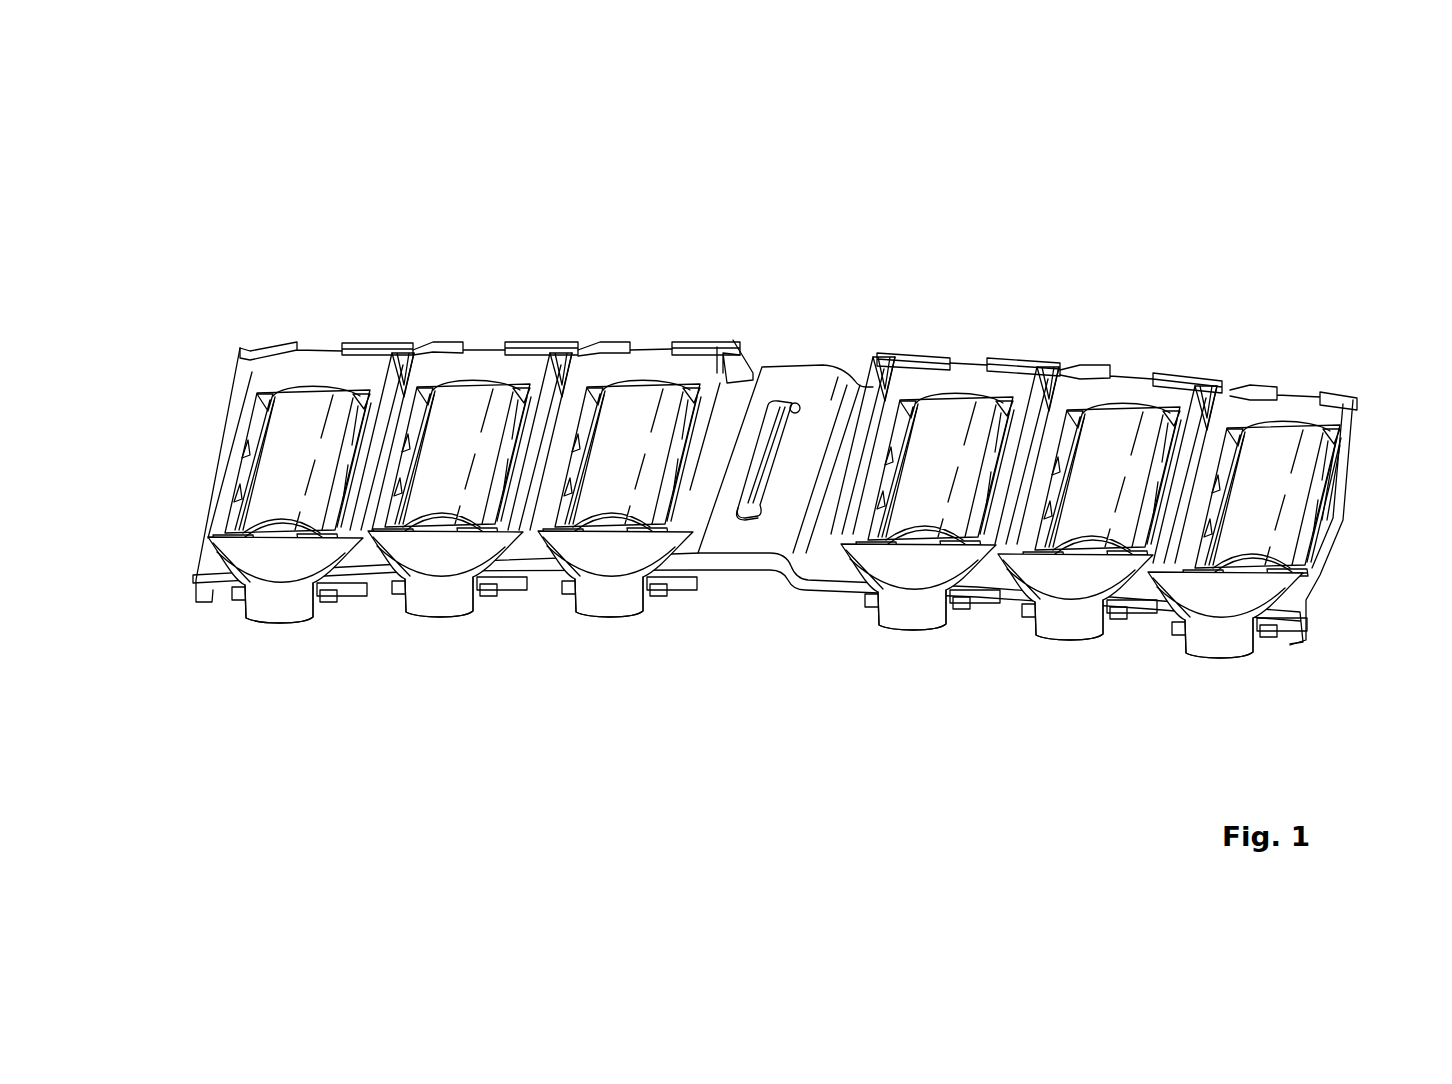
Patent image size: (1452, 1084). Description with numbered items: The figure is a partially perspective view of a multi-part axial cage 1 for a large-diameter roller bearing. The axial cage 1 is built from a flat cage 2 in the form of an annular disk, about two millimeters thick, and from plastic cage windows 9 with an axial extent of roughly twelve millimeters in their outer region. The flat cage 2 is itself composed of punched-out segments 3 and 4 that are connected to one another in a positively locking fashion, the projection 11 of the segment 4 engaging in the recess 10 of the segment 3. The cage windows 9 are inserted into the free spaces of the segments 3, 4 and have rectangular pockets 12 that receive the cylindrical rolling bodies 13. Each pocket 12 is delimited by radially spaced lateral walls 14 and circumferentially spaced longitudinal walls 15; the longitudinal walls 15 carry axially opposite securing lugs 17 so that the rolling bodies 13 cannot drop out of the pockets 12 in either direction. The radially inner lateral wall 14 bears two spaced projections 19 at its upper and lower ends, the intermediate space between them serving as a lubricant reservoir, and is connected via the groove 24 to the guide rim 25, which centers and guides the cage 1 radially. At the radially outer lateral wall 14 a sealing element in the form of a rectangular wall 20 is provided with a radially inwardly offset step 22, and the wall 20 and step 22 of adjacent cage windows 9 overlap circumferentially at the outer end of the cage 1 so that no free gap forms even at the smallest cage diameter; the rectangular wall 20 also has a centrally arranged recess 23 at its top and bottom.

The axial cage 1 is at (1077, 226).
The flat cage 2 is at (797, 355).
The segment 3 is at (1000, 597).
The segment 4 is at (220, 587).
The cage window 9 is at (435, 557).
The recess 10 is at (798, 410).
The projection 11 is at (738, 520).
The pocket 12 is at (525, 392).
The rolling body 13 is at (282, 423).
The lateral wall 14 is at (1290, 600).
The longitudinal wall 15 is at (568, 415).
The securing lug 17 is at (362, 398).
The projection 19 is at (245, 533).
The rectangular wall 20 is at (345, 346).
The step 22 is at (402, 375).
The recess 23 is at (480, 350).
The groove 24 is at (637, 597).
The guide rim 25 is at (453, 607).